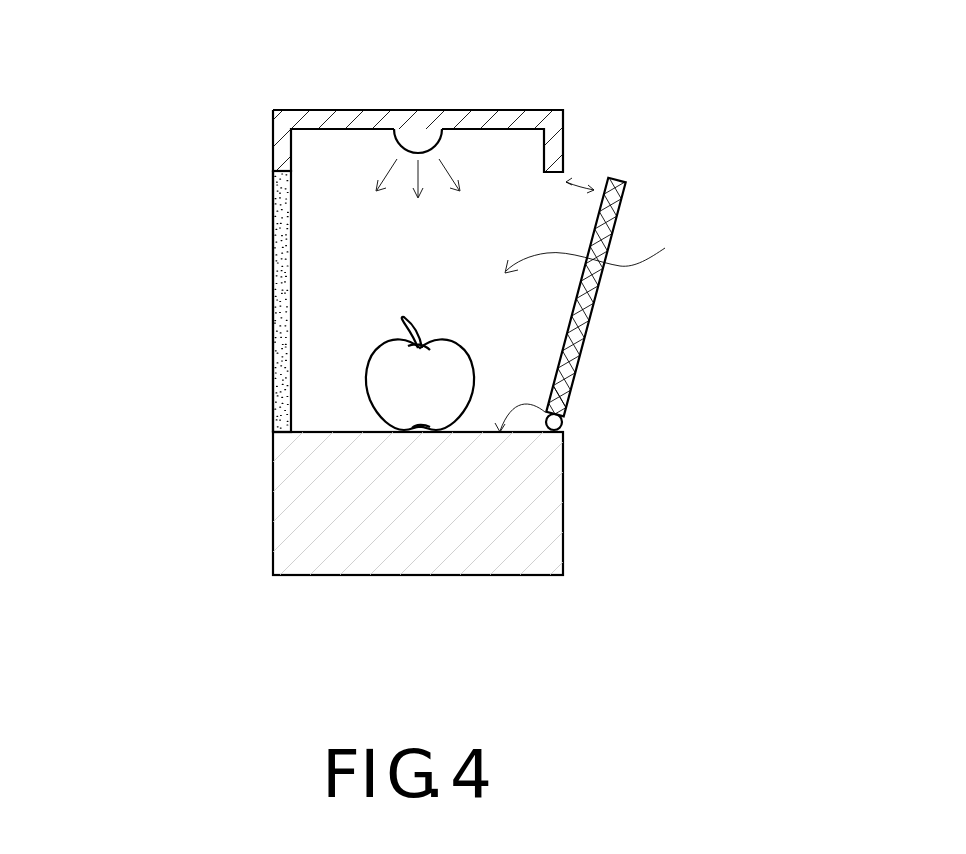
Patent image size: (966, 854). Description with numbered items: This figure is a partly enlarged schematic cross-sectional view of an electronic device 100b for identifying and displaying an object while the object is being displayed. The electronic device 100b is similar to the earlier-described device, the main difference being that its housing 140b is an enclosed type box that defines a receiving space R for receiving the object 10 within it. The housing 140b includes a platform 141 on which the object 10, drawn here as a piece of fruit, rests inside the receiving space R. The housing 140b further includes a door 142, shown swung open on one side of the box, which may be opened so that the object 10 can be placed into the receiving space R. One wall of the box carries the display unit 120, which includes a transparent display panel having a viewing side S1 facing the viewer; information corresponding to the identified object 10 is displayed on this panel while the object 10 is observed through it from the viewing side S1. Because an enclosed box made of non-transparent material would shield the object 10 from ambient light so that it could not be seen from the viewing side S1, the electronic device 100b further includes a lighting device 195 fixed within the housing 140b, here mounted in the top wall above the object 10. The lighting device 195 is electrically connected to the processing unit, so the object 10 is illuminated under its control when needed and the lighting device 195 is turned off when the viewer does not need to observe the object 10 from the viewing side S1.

The electronic device 100b is at (883, 553).
The housing 140b is at (552, 134).
The lighting device 195 is at (420, 134).
The display unit 120 is at (283, 283).
The viewing side S1 is at (265, 373).
The object 10 is at (398, 398).
The door 142 is at (578, 312).
The platform 141 is at (566, 420).
The receiving space R is at (596, 251).